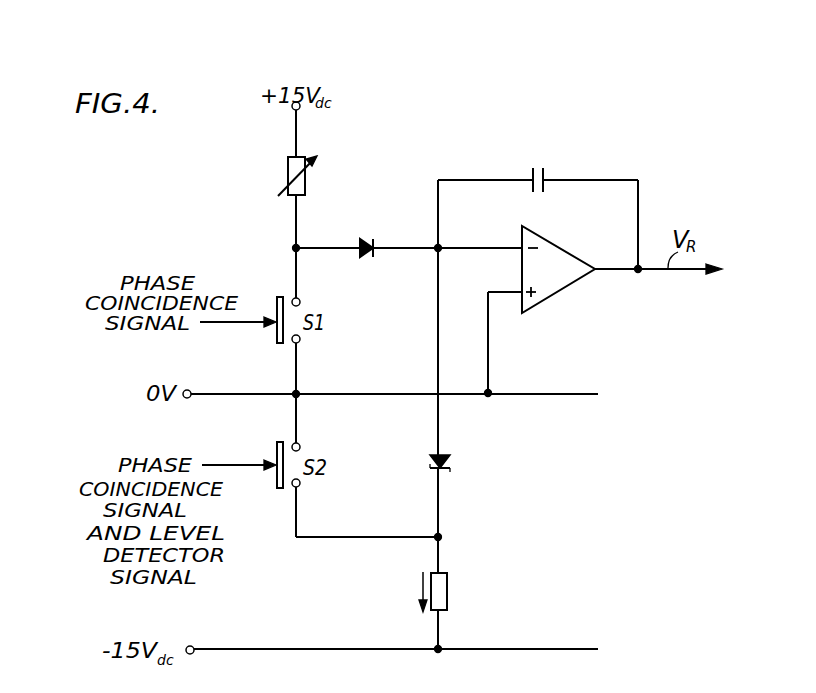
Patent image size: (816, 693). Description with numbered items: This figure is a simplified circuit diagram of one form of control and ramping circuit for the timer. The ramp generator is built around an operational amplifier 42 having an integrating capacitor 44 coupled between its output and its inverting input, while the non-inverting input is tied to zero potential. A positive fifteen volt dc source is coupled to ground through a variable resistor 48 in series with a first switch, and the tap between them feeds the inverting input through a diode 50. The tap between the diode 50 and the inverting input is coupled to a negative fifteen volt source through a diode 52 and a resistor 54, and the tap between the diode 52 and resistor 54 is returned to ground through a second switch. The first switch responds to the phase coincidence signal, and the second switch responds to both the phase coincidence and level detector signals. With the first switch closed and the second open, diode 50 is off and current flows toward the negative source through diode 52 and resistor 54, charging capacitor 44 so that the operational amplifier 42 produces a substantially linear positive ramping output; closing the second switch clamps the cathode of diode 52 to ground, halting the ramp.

The operational amplifier 42 is at (563, 287).
The integrating capacitor 44 is at (545, 174).
The variable resistor 48 is at (288, 172).
The diode 50 is at (372, 240).
The diode 52 is at (452, 462).
The resistor 54 is at (449, 592).